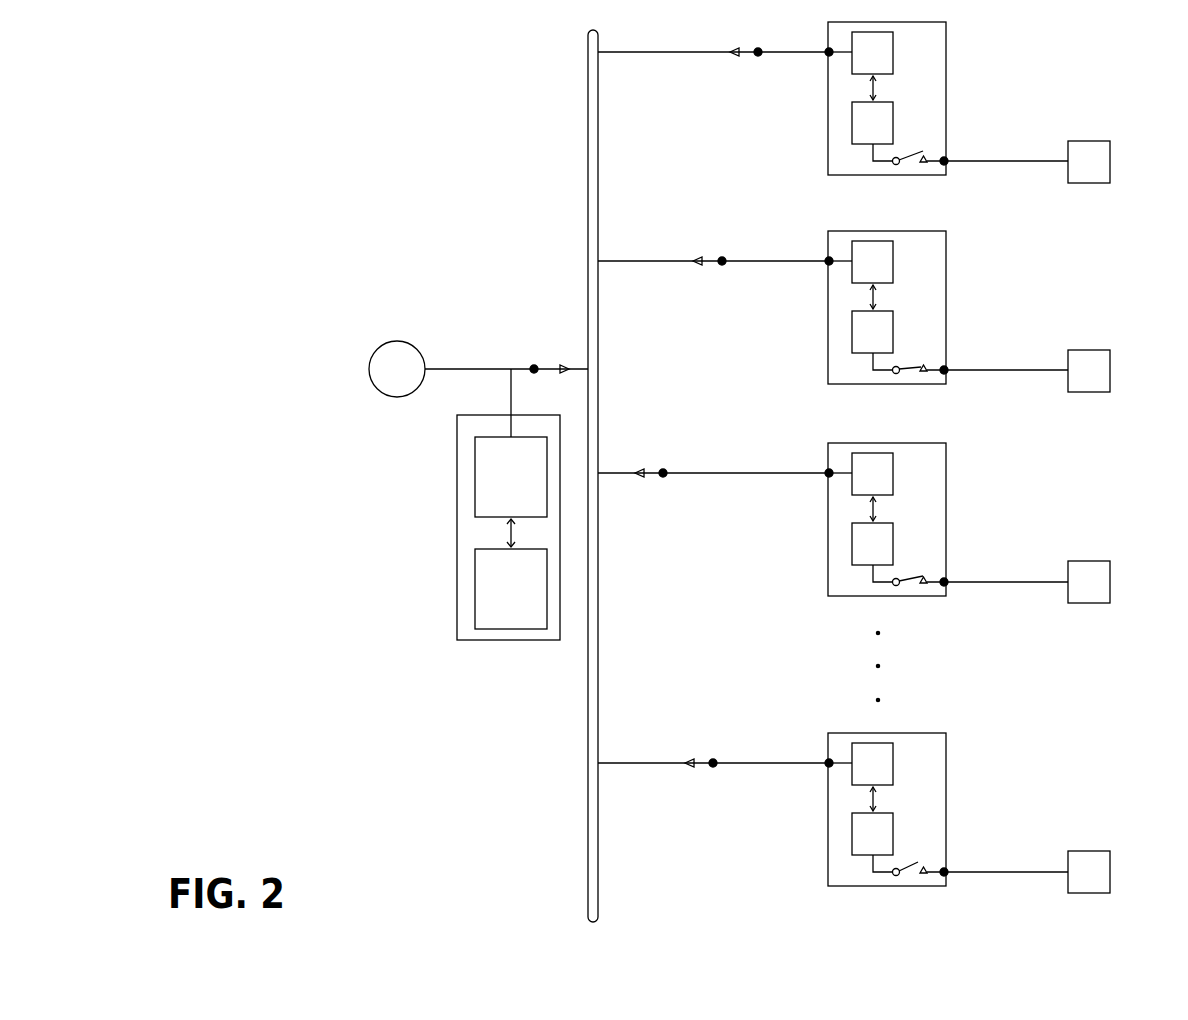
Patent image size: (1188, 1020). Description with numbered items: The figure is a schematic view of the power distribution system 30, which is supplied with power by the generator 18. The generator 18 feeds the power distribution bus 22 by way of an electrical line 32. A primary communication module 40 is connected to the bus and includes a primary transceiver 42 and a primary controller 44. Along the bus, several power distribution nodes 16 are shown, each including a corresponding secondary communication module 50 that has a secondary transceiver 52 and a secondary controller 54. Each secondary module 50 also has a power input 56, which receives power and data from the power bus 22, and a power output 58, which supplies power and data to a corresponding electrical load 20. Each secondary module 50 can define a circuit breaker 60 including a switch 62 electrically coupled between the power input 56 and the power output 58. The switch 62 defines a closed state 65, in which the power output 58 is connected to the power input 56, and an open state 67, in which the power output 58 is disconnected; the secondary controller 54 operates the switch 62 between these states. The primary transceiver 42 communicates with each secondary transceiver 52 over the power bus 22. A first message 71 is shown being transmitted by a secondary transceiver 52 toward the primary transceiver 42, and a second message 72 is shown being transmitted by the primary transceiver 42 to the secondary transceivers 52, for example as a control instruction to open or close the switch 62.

The power distribution node 16 is at (952, 26).
The generator 18 is at (389, 379).
The electrical load 20 is at (1089, 517).
The power distribution bus 22 is at (588, 180).
The power distribution system 30 is at (1148, 53).
The electrical line 32 is at (458, 367).
The primary communication module 40 is at (457, 520).
The primary transceiver 42 is at (511, 477).
The primary controller 44 is at (511, 574).
The secondary communication module 50 is at (828, 140).
The secondary transceiver 52 is at (872, 408).
The secondary controller 54 is at (872, 465).
The power input 56 is at (826, 49).
The power output 58 is at (947, 165).
The circuit breaker 60 is at (920, 130).
The switch 62 is at (900, 164).
The closed state 65 is at (932, 355).
The open state 67 is at (931, 148).
The first message 71 is at (745, 48).
The second message 72 is at (550, 366).